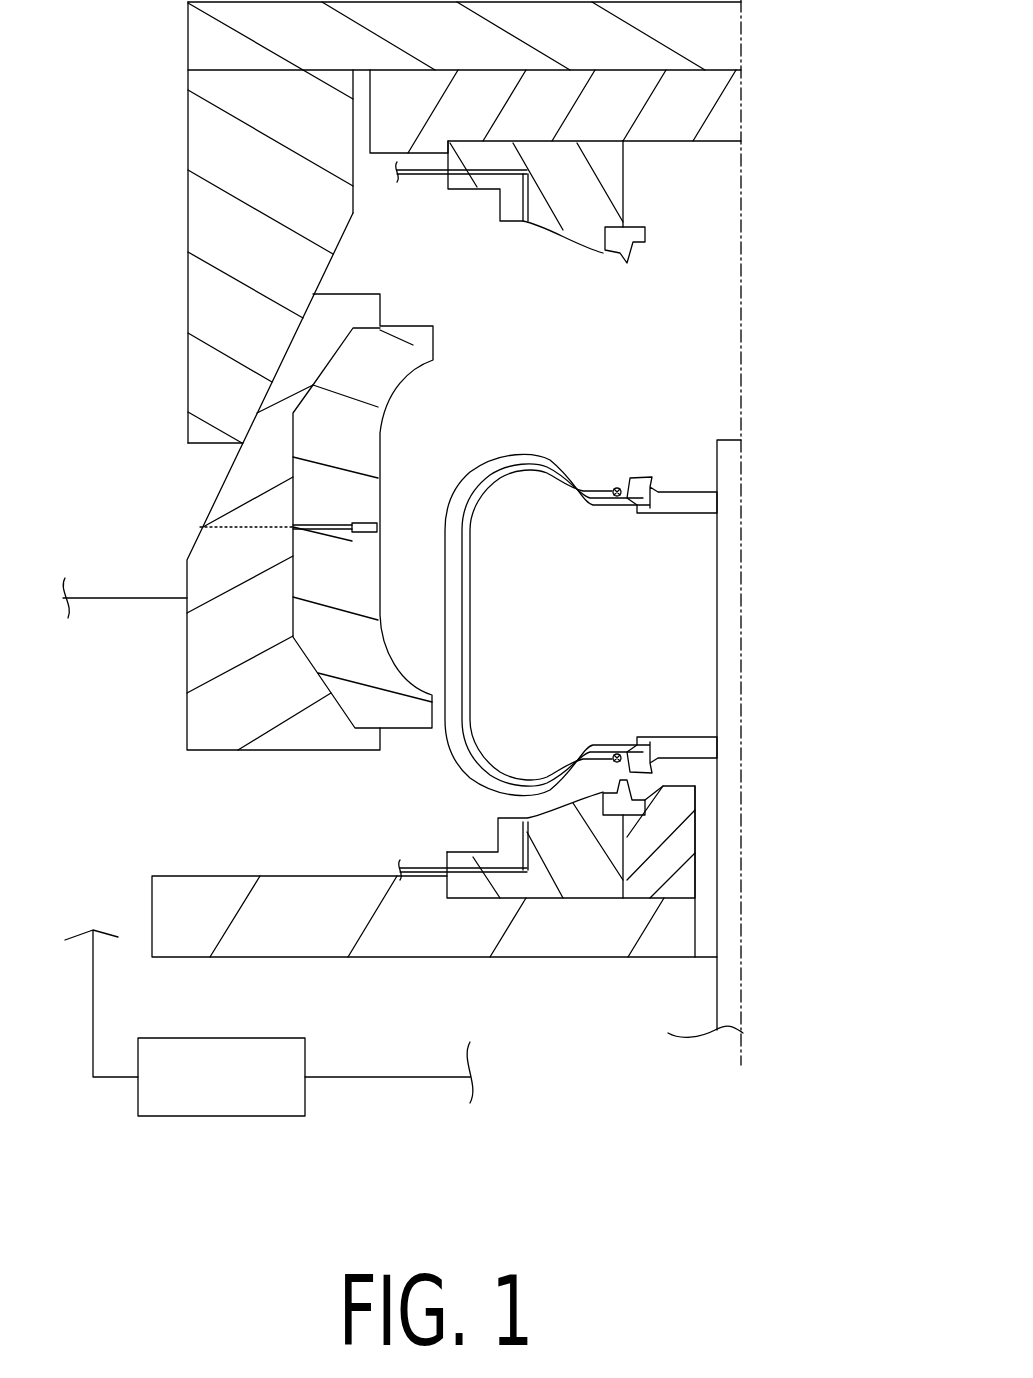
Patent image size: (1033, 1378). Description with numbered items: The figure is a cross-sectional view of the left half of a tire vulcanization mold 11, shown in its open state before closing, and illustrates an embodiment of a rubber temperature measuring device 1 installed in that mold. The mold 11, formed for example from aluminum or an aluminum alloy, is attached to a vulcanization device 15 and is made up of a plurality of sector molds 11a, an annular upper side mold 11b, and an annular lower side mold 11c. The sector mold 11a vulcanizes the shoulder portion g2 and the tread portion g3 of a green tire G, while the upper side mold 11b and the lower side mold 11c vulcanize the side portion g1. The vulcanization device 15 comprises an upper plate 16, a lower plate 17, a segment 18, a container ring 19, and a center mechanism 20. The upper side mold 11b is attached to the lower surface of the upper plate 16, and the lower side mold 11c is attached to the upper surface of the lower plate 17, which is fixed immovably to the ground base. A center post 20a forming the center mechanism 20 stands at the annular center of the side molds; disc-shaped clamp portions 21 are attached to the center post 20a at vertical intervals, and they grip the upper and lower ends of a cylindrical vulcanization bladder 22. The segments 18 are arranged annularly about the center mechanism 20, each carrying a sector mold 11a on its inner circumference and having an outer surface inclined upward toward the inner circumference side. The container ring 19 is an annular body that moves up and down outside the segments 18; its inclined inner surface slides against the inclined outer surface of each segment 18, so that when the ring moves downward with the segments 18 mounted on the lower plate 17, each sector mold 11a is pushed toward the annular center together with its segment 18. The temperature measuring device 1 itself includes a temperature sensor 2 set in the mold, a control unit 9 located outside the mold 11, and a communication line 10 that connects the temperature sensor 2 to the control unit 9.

The rubber temperature measuring device 1 is at (285, 1145).
The temperature sensor 2 is at (525, 222).
The control unit 9 is at (217, 1103).
The communication line 10 is at (420, 177).
The vulcanization mold 11 is at (445, 364).
The sector mold 11a is at (397, 348).
The upper side mold 11b is at (610, 182).
The lower side mold 11c is at (583, 887).
The vulcanization device 15 is at (152, 150).
The upper plate 16 is at (730, 108).
The lower plate 17 is at (287, 878).
The segment 18 is at (225, 497).
The container ring 19 is at (205, 300).
The center mechanism 20 is at (746, 494).
The center post 20a is at (742, 652).
The clamp portion 21 is at (687, 505).
The vulcanization bladder 22 is at (470, 657).
The green tire G is at (447, 512).
The side portion g1 is at (577, 470).
The shoulder portion g2 is at (488, 465).
The tread portion g3 is at (447, 597).